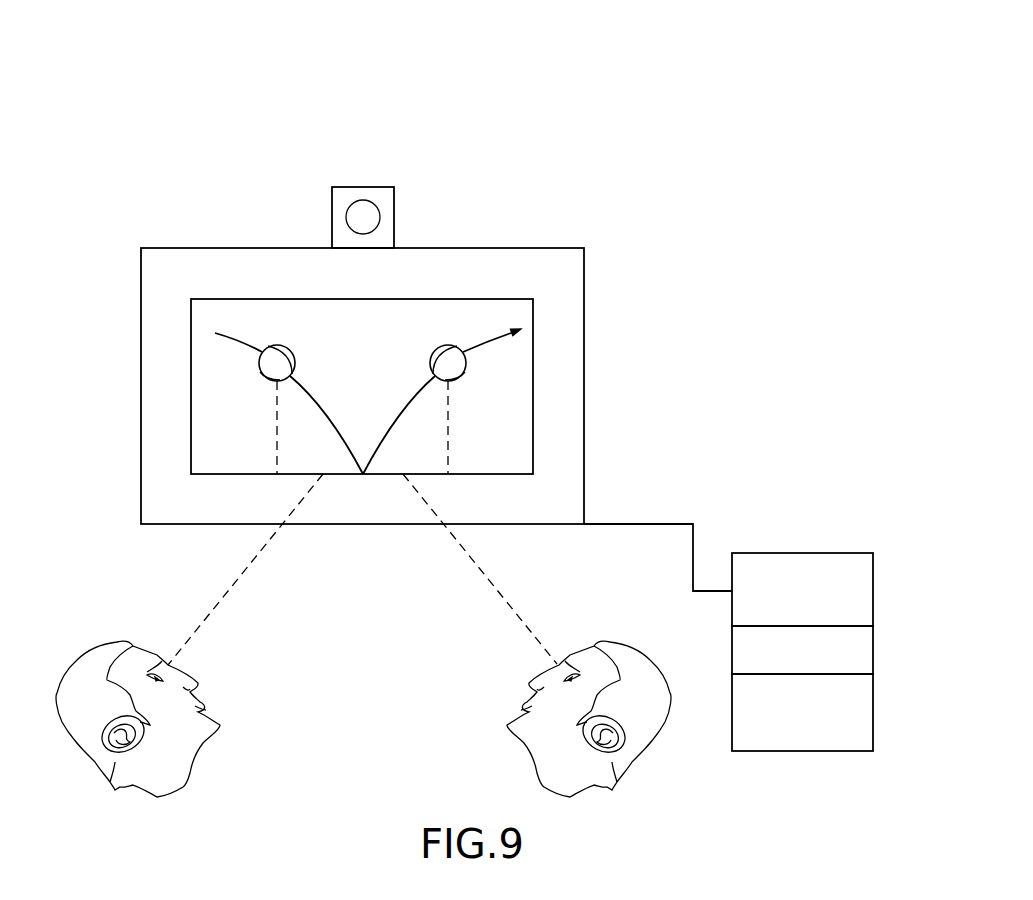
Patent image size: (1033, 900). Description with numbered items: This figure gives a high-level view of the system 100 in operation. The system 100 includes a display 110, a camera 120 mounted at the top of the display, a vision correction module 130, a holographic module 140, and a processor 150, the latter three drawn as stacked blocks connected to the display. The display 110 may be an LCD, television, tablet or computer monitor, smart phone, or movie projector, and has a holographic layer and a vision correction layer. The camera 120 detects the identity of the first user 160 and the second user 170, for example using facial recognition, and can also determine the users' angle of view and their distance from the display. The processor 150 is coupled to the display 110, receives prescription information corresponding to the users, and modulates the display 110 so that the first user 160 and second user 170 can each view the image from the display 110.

The system 100 is at (143, 112).
The display 110 is at (141, 307).
The camera 120 is at (397, 187).
The vision correction module 130 is at (874, 592).
The holographic module 140 is at (874, 652).
The processor 150 is at (874, 714).
The first user 160 is at (140, 798).
The second user 170 is at (587, 798).